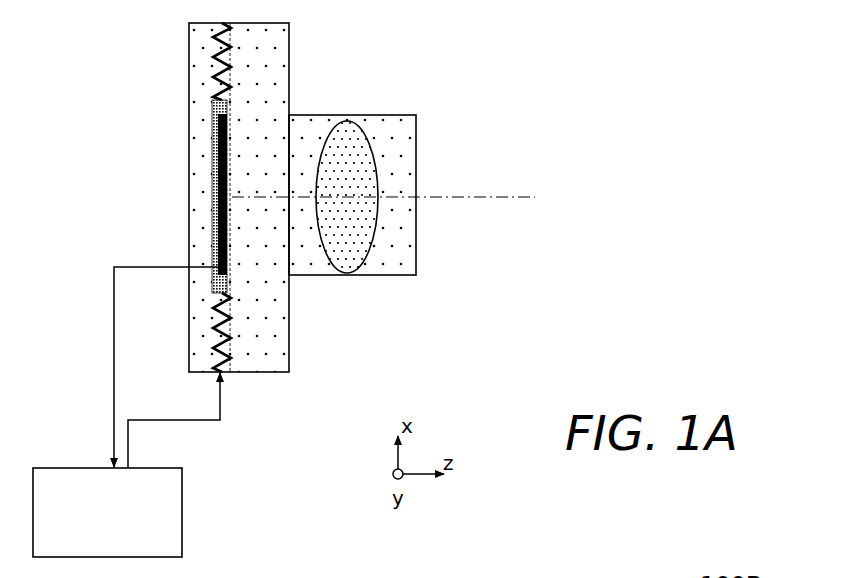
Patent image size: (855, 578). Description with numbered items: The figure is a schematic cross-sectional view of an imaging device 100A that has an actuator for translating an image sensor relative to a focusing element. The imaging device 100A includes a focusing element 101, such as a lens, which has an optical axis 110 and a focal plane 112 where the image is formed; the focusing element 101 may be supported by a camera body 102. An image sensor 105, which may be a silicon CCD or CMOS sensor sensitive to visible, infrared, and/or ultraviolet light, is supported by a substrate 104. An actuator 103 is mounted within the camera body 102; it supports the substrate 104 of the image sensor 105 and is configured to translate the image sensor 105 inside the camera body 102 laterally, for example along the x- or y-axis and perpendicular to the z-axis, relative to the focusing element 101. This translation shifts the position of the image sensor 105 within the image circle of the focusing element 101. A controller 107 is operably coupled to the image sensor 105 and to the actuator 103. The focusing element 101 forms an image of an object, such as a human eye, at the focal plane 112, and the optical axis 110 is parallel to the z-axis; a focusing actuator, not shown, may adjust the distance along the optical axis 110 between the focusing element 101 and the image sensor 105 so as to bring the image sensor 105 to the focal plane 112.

The imaging device 100A is at (588, 115).
The focusing element 101 is at (365, 217).
The camera body 102 is at (270, 50).
The actuator 103 is at (222, 75).
The substrate 104 is at (222, 110).
The image sensor 105 is at (222, 165).
The controller 107 is at (86, 521).
The optical axis 110 is at (488, 197).
The focal plane 112 is at (230, 341).